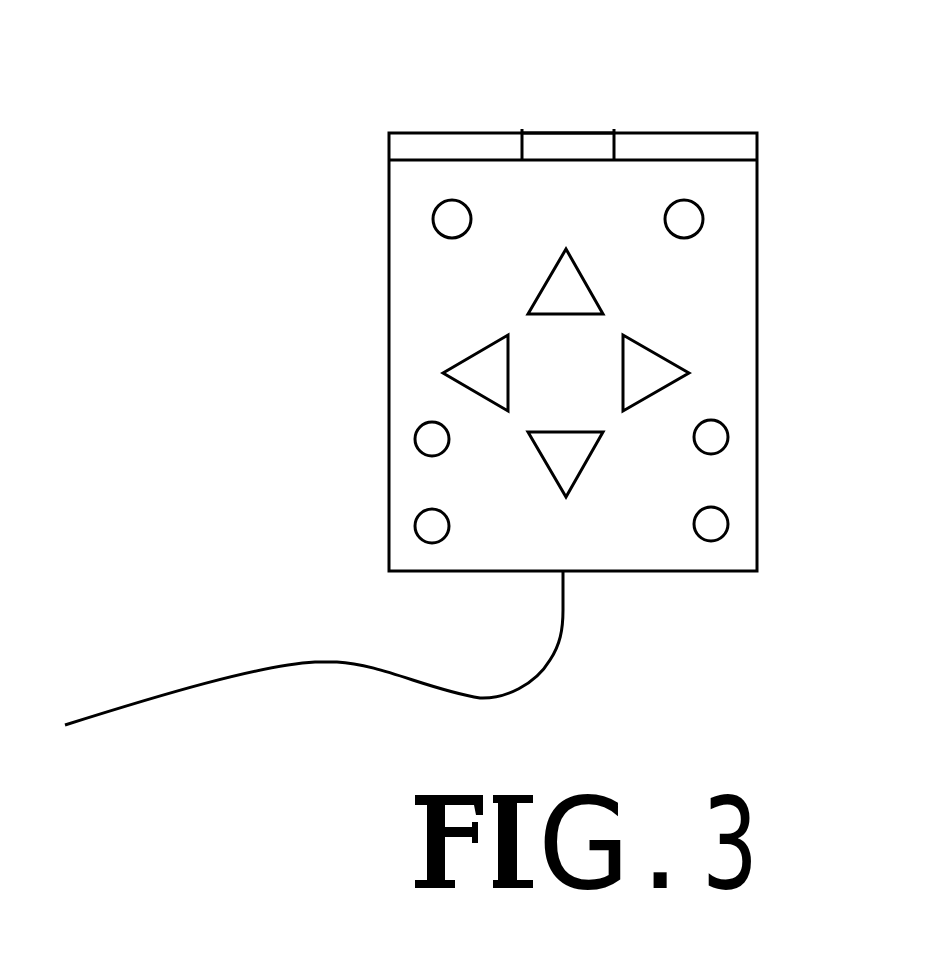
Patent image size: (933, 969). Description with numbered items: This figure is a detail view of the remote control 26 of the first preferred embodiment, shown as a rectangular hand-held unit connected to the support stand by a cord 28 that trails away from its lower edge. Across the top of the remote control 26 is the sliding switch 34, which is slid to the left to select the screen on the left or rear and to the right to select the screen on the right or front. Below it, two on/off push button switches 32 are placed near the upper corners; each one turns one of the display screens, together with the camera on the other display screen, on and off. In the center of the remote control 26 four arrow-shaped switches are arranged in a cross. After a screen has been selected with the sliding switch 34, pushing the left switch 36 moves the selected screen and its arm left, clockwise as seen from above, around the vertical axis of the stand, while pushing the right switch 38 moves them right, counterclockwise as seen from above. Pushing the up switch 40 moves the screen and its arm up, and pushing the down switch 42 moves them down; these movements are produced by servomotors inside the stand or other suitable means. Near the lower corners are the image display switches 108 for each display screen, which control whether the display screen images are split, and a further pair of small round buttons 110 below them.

The remote control 26 is at (758, 571).
The cord 28 is at (295, 665).
The on/off push button switches 32 is at (431, 219).
The sliding switch 34 is at (563, 133).
The left switch 36 is at (441, 369).
The right switch 38 is at (690, 373).
The up switch 40 is at (571, 258).
The down switch 42 is at (549, 472).
The image display switches 108 is at (414, 440).
The lower auxiliary buttons 110 is at (414, 526).